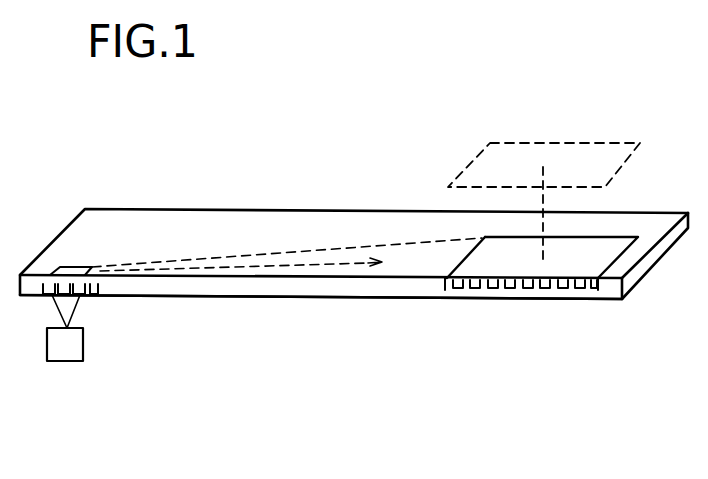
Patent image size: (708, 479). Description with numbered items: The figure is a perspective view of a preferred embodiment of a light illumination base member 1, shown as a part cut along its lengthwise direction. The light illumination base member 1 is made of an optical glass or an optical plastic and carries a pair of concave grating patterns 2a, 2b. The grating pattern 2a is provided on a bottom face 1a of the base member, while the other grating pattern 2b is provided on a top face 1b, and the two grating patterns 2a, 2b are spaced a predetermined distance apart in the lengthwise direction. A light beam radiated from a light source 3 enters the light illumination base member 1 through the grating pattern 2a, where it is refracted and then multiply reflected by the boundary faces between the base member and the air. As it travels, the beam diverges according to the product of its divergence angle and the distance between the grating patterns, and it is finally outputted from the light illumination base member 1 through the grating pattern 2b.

The light illumination base member 1 is at (250, 230).
The bottom face 1a is at (295, 297).
The top face 1b is at (343, 222).
The grating pattern 2a is at (94, 297).
The grating pattern 2b is at (557, 287).
The light source 3 is at (63, 353).